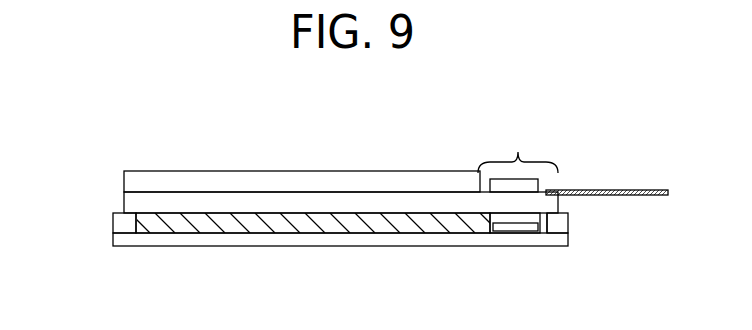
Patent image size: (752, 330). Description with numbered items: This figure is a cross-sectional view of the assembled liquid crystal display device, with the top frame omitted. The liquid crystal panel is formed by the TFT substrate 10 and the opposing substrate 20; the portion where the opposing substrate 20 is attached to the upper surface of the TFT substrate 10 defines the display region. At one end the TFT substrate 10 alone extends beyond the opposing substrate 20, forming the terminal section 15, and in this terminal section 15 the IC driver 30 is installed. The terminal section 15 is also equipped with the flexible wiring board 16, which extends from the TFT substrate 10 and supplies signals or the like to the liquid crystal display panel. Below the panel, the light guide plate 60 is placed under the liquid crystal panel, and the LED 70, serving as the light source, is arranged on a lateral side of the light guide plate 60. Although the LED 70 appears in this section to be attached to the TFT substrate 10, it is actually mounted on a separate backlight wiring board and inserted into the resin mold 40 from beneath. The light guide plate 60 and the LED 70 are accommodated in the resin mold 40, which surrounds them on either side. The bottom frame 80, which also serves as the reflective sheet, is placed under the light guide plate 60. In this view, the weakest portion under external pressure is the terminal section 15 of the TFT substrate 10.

The TFT substrate 10 is at (137, 203).
The opposing substrate 20 is at (137, 180).
The IC driver 30 is at (515, 187).
The resin mold 40 is at (125, 222).
The light guide plate 60 is at (298, 226).
The LED 70 is at (523, 230).
The bottom frame 80 is at (124, 238).
The terminal section 15 is at (518, 150).
The flexible wiring board 16 is at (629, 190).